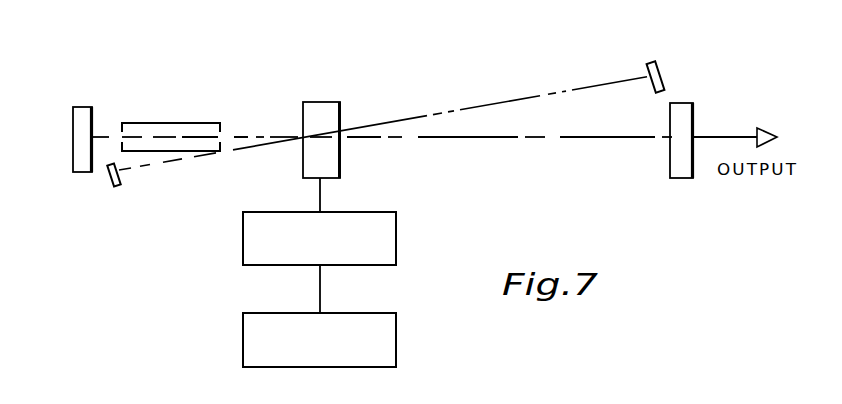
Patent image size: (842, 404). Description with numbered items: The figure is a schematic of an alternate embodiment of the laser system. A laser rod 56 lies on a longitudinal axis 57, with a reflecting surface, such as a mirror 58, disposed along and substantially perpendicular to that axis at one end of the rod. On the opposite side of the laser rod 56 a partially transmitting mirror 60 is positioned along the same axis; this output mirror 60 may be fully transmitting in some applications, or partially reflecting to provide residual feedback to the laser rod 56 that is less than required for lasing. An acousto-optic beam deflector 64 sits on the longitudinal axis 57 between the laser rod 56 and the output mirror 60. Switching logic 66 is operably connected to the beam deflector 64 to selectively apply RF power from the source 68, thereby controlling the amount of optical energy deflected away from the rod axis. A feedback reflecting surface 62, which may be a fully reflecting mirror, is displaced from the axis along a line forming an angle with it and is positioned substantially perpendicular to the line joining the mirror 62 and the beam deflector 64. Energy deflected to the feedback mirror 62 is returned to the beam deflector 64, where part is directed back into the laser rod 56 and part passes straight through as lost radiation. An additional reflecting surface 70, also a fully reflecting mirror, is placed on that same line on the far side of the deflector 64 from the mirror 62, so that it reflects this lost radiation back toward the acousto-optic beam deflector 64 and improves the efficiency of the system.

The laser rod 56 is at (187, 123).
The longitudinal axis 57 is at (236, 137).
The mirror 58 is at (78, 122).
The partially transmitting mirror 60 is at (678, 179).
The feedback reflecting surface 62 is at (663, 68).
The acousto-optic beam deflector 64 is at (327, 101).
The switching logic 66 is at (394, 239).
The RF power source 68 is at (394, 344).
The additional reflecting surface 70 is at (120, 174).